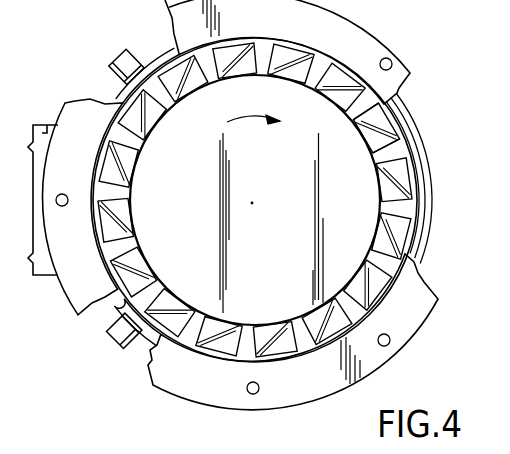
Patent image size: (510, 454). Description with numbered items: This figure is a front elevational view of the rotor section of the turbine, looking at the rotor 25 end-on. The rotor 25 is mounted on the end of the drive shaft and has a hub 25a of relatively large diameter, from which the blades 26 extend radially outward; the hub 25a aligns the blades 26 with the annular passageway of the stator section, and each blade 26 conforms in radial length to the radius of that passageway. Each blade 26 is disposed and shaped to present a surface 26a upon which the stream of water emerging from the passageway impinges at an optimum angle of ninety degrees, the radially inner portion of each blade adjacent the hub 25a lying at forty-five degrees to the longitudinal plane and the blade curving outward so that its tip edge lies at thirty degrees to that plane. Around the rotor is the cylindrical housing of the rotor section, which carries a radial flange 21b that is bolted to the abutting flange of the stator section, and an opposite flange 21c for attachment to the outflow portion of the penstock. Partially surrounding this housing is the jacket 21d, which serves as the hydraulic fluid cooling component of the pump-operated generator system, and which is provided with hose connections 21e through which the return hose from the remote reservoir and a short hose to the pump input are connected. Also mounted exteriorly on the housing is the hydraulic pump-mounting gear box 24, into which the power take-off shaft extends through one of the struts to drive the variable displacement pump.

The radial flange 21b is at (412, 322).
The opposite flange 21c is at (78, 440).
The jacket 21d is at (153, 63).
The hose connections 21e is at (114, 58).
The hydraulic pump-mounting gear box 24 is at (47, 130).
The rotor 25 is at (262, 194).
The hub 25a is at (160, 264).
The blades 26 is at (388, 173).
The surface 26a is at (375, 123).